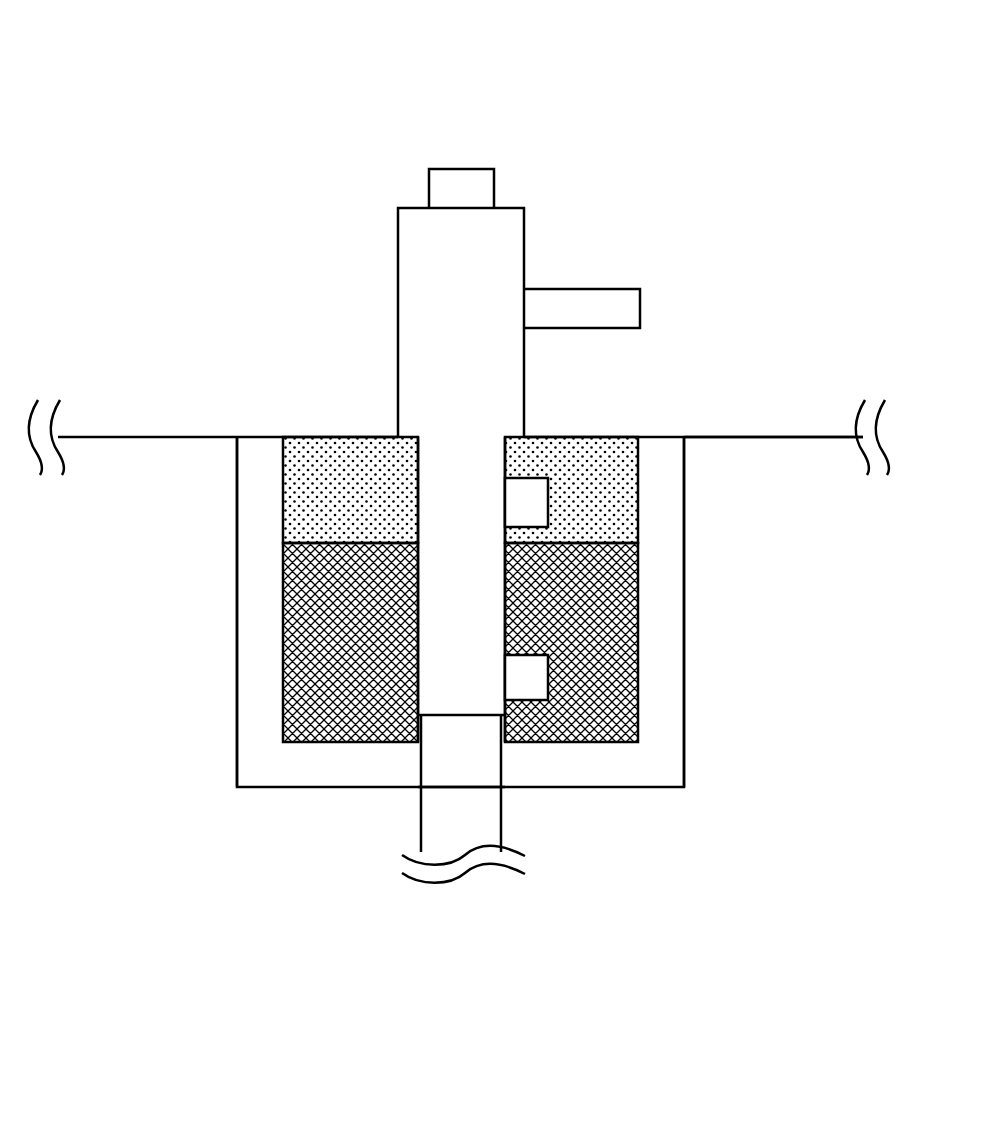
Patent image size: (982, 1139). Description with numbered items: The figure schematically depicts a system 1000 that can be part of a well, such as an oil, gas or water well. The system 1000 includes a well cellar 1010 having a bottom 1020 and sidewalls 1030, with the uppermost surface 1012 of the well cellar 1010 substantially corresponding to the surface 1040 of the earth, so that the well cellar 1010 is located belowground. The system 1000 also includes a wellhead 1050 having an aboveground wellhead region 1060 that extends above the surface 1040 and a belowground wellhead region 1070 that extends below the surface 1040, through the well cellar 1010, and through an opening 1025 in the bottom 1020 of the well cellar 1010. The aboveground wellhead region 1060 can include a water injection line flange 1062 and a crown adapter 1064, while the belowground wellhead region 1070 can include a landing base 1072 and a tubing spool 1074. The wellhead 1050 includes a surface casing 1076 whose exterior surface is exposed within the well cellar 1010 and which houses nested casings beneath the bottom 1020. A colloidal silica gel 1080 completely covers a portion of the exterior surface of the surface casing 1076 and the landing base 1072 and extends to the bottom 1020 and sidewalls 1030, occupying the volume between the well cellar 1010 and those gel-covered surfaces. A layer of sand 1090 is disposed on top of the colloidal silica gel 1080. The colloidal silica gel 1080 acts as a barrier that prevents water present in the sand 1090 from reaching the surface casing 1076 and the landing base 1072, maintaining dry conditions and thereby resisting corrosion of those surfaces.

The system 1000 is at (134, 76).
The well cellar 1010 is at (196, 519).
The uppermost surface 1012 is at (258, 437).
The bottom 1020 is at (297, 770).
The opening 1025 is at (422, 790).
The sidewalls 1030 is at (253, 587).
The surface 1040 is at (745, 437).
The wellhead 1050 is at (338, 307).
The aboveground wellhead region 1060 is at (398, 252).
The water injection line flange 1062 is at (580, 289).
The crown adapter 1064 is at (461, 169).
The belowground wellhead region 1070 is at (417, 647).
The landing base 1072 is at (548, 676).
The tubing spool 1074 is at (548, 500).
The surface casing 1076 is at (502, 815).
The colloidal silica gel 1080 is at (400, 690).
The layer of sand 1090 is at (585, 450).